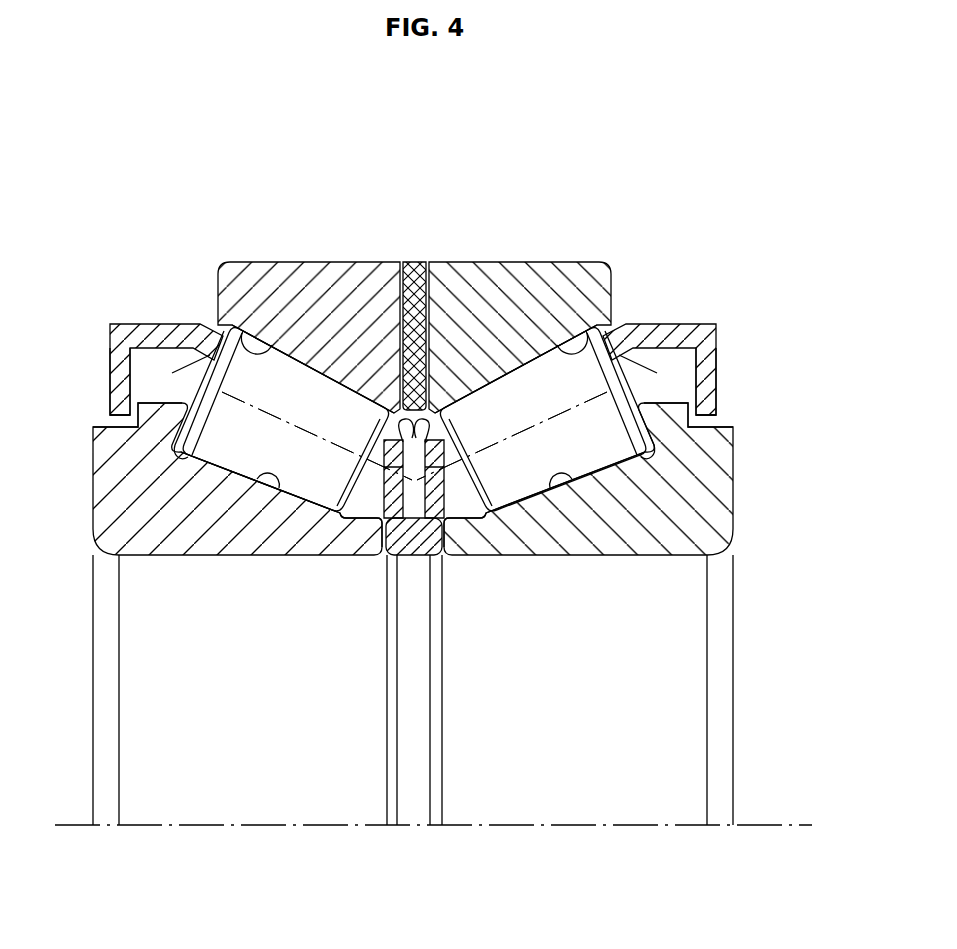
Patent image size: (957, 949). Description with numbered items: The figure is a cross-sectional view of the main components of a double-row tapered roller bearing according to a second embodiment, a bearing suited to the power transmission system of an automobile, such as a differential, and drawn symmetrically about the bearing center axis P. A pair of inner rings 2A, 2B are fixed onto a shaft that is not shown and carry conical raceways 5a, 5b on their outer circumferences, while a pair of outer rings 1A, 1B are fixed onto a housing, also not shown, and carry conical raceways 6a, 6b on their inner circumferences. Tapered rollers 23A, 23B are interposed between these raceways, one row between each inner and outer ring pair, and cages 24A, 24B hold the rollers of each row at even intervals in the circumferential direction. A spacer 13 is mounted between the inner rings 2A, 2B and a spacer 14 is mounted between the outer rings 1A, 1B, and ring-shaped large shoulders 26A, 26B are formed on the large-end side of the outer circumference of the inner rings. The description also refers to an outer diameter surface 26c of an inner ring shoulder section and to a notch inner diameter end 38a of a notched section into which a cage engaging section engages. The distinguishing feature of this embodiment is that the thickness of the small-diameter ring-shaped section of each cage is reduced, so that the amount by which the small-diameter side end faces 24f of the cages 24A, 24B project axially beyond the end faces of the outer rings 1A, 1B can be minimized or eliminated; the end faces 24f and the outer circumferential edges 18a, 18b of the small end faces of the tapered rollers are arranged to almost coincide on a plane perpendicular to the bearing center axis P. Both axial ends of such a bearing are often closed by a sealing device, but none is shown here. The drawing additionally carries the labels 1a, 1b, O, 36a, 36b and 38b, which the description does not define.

The outer ring 1A is at (334, 277).
The outer ring 1B is at (494, 277).
The outer ring raceway surface 1a is at (462, 298).
The outer ring raceway surface 1b is at (357, 297).
The spacer 14 is at (410, 323).
The outer circumferential edge of small end face 18a is at (391, 417).
The outer circumferential edge of small end face 18b is at (438, 418).
The conical raceway 6a is at (232, 322).
The conical raceway 6b is at (595, 322).
The roller center O is at (303, 415).
The cage 24A is at (136, 332).
The cage 24B is at (655, 334).
The outer diameter surface 26c is at (172, 405).
The seal cylindrical portion 36a is at (112, 361).
The seal cylindrical portion 36b is at (717, 359).
The notch inner diameter end 38a is at (108, 414).
The seal flange end 38b is at (714, 421).
The ring-shaped large shoulder 26A is at (140, 436).
The ring-shaped large shoulder 26B is at (708, 430).
The inner ring 2A is at (207, 540).
The inner ring 2B is at (658, 540).
The conical raceway 5a is at (251, 540).
The conical raceway 5b is at (606, 540).
The tapered roller 23A is at (310, 540).
The tapered roller 23B is at (560, 540).
The small-diameter side end face 24f is at (405, 447).
The spacer 13 is at (436, 560).
The bearing center axis P is at (773, 825).